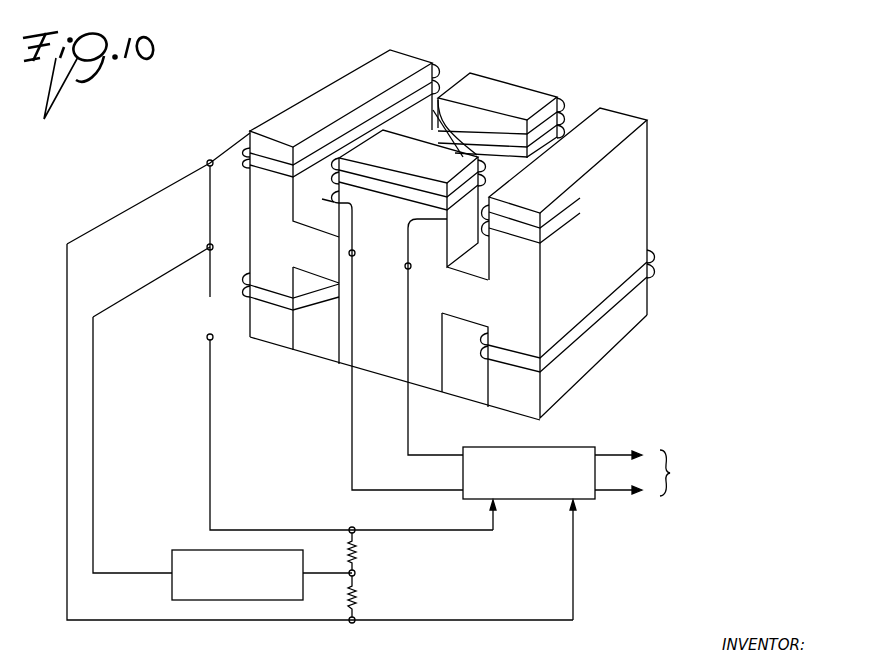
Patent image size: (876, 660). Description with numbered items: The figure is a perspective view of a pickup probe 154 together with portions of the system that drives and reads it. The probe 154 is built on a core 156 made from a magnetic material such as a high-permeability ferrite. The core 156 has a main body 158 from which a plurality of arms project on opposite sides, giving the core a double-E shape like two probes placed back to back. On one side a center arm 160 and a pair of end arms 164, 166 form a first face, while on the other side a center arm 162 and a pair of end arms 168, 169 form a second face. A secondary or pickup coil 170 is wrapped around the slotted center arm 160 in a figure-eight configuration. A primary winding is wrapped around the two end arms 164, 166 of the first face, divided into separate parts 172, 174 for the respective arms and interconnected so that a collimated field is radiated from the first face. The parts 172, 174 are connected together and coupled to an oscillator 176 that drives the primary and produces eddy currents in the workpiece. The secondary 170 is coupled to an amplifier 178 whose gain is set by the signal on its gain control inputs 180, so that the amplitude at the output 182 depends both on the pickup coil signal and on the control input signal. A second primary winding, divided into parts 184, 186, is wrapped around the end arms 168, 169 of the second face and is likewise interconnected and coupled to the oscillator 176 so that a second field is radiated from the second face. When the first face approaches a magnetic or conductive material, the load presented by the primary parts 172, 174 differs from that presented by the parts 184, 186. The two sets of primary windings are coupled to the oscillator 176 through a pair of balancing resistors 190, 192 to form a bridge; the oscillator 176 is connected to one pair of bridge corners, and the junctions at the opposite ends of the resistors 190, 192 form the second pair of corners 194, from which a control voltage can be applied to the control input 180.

The probe 154 is at (660, 82).
The core 156 is at (650, 230).
The main body 158 is at (311, 245).
The center arm 160 is at (497, 88).
The center arm 162 is at (380, 368).
The end arm 164 is at (357, 87).
The end arm 166 is at (620, 128).
The end arm 168 is at (278, 338).
The end arm 169 is at (510, 398).
The secondary or pickup coil 170 is at (565, 116).
The primary winding part 172 is at (230, 153).
The primary winding part 174 is at (520, 240).
The oscillator 176 is at (187, 550).
The amplifier 178 is at (573, 448).
The gain control inputs 180 is at (542, 512).
The output 182 is at (657, 473).
The primary winding part 184 is at (208, 341).
The primary winding part 186 is at (600, 327).
The balancing resistor 190 is at (354, 545).
The balancing resistor 192 is at (354, 597).
The second pair of corners 194 is at (350, 527).